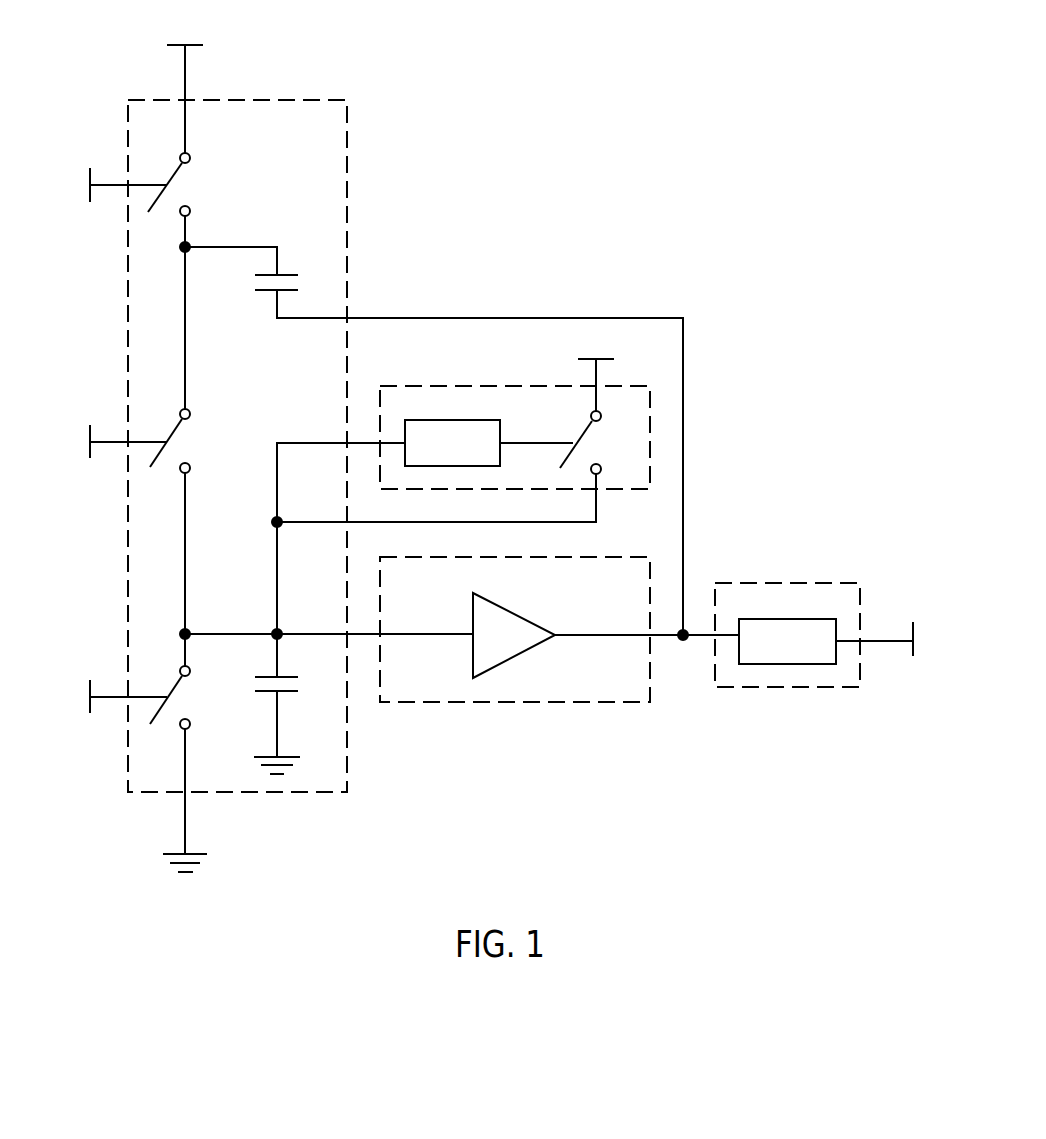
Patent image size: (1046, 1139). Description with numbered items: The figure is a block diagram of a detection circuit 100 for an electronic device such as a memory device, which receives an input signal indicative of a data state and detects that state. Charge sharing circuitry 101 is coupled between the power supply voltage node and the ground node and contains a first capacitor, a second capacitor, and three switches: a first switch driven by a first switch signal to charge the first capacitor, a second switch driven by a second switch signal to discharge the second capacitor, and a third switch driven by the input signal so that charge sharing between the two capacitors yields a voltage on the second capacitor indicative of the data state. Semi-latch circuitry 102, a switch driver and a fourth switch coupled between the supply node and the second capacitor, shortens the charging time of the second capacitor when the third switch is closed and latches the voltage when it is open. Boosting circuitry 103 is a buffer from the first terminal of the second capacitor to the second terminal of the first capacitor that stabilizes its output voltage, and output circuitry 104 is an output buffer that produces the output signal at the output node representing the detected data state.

The detection circuit 100 is at (783, 79).
The charge sharing circuitry 101 is at (237, 100).
The semi-latch circuitry 102 is at (515, 386).
The boosting circuitry 103 is at (515, 702).
The output circuitry 104 is at (787, 583).